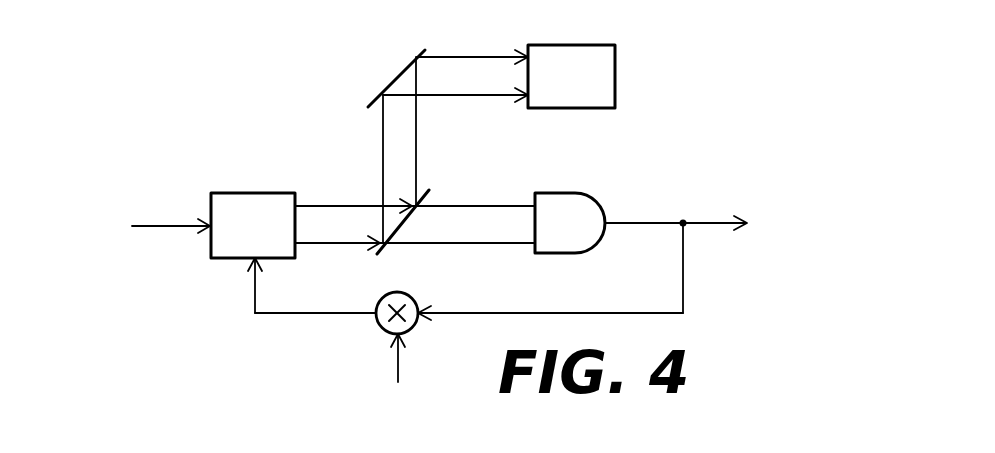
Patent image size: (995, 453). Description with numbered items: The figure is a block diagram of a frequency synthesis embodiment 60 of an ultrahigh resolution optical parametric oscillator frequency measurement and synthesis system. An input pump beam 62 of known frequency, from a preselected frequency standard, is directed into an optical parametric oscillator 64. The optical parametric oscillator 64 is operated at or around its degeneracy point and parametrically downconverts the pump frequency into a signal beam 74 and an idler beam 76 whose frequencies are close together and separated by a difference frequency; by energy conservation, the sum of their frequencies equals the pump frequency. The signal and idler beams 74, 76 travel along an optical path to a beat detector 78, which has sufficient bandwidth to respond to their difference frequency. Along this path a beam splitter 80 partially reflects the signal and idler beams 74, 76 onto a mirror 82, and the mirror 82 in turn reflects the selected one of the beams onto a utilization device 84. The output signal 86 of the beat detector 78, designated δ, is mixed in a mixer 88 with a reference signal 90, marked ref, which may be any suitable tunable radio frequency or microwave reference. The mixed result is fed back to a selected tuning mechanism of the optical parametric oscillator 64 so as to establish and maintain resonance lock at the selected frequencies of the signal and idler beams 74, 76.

The frequency synthesis embodiment of the ultrahigh resolution optical parametric os 60 is at (208, 313).
The input pump beam 62 is at (144, 225).
The optical parametric oscillator 64 is at (247, 193).
The signal beam 74 is at (312, 206).
The idler beam 76 is at (312, 243).
The beat detector 78 is at (563, 193).
The beam splitter 80 is at (422, 194).
The mirror 82 is at (407, 64).
The utilization device 84 is at (580, 45).
The output signal 86 is at (712, 220).
The mixer 88 is at (405, 292).
The reference signal 90 is at (396, 362).